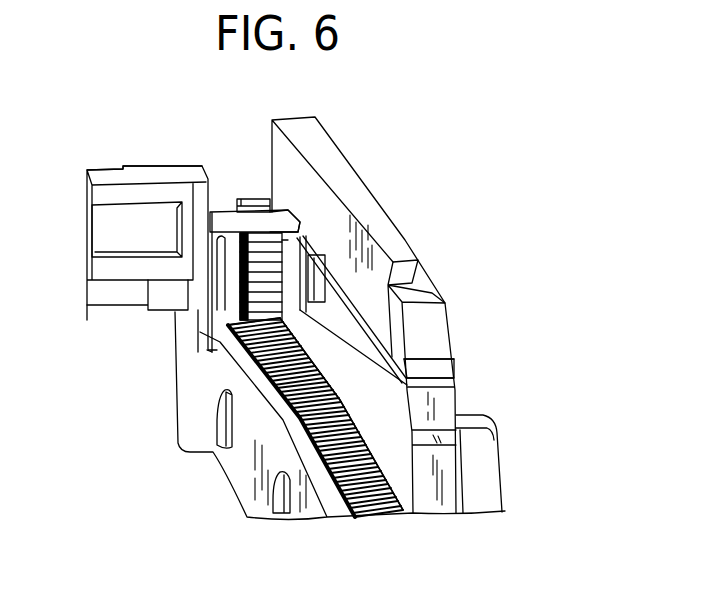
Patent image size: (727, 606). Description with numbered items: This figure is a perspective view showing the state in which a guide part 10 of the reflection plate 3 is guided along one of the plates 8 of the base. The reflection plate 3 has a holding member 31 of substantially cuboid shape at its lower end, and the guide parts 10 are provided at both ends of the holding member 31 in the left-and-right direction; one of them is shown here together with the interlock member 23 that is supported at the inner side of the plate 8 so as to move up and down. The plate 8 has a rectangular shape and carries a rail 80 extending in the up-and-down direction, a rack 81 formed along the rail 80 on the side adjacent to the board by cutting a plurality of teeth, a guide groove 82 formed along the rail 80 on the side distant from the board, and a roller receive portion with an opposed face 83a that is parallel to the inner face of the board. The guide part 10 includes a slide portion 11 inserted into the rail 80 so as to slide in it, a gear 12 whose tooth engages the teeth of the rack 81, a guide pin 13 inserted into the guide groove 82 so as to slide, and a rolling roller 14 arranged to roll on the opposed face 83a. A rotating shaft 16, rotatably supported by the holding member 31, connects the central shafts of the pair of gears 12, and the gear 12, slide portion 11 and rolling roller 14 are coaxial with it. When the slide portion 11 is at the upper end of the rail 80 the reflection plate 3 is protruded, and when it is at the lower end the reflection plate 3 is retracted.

The reflection plate 3 is at (188, 169).
The holding member 31 is at (167, 169).
The rotating shaft 16 is at (118, 297).
The guide part 10 is at (222, 211).
The guide pin 13 is at (289, 223).
The gear 12 is at (250, 198).
The slide portion 11 is at (320, 292).
The plate 8 is at (333, 130).
The guide groove 82 is at (303, 250).
The rail 80 is at (323, 330).
The rolling roller 14 is at (320, 336).
The opposed face 83a is at (347, 390).
The interlock member 23 is at (251, 468).
The rack 81 is at (373, 488).